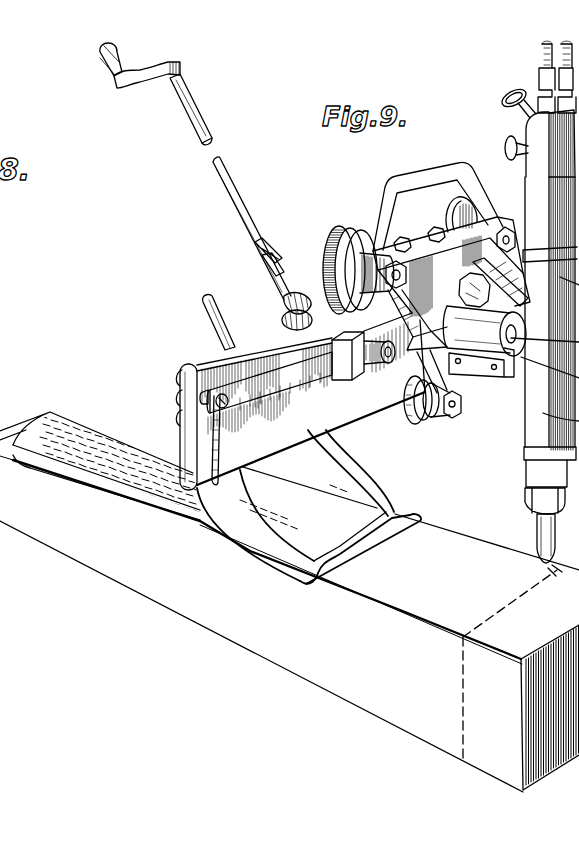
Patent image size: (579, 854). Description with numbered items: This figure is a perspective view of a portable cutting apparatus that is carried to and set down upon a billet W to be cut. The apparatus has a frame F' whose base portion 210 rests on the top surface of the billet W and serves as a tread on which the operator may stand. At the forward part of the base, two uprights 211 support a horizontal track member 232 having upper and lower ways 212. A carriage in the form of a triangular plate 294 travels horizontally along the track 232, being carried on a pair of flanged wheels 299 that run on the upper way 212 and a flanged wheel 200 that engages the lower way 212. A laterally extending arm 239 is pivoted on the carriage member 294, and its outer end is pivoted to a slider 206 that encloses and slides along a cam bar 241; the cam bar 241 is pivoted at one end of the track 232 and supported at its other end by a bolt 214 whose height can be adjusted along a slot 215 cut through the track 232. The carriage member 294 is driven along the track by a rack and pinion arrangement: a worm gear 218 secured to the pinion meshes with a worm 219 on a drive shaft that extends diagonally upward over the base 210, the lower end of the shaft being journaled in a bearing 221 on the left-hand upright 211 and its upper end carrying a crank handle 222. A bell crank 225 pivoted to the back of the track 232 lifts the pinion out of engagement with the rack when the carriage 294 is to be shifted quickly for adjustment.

The flanged wheel 200 is at (442, 418).
The slider 206 is at (355, 348).
The base portion 210 is at (93, 442).
The uprights 211 is at (347, 473).
The upper and lower ways 212 is at (200, 364).
The bolt 214 is at (226, 410).
The slot 215 is at (186, 425).
The worm gear 218 is at (323, 297).
The worm 219 is at (282, 321).
The bearing 221 is at (282, 294).
The crank handle 222 is at (145, 74).
The bell crank 225 is at (204, 306).
The track member 232 is at (315, 405).
The laterally extending arm 239 is at (448, 354).
The cam bar 241 is at (288, 382).
The carriage member 294 is at (451, 239).
The flanged wheels 299 is at (346, 234).
The frame F' is at (204, 551).
The work piece W is at (295, 652).